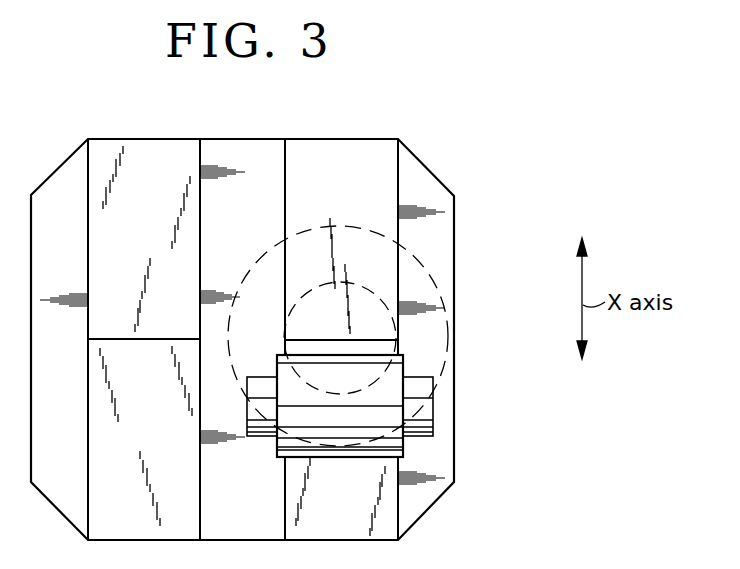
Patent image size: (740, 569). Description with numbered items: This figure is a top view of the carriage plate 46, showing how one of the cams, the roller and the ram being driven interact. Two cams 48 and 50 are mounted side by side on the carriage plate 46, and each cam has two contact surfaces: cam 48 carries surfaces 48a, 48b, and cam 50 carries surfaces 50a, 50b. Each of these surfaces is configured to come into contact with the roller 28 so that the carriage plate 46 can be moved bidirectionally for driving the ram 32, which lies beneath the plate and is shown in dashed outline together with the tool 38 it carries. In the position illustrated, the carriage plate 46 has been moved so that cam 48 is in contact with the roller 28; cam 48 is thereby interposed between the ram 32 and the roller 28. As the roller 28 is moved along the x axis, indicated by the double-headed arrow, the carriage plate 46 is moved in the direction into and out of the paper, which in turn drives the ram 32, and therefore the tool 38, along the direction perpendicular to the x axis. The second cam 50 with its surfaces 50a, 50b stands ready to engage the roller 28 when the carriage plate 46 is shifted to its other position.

The roller 28 is at (403, 456).
The ram 32 is at (437, 281).
The tool 38 is at (368, 290).
The carriage plate 46 is at (455, 401).
The cam 48 is at (337, 150).
The contact surface 48a is at (358, 507).
The contact surface 48b is at (360, 197).
The cam 50 is at (137, 155).
The contact surface 50a is at (160, 446).
The contact surface 50b is at (165, 255).